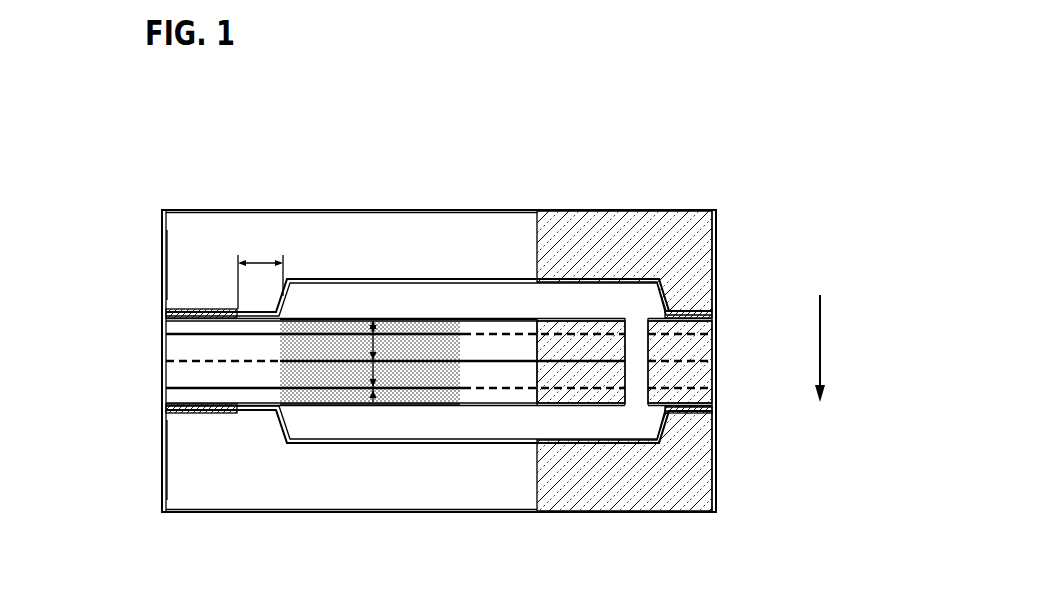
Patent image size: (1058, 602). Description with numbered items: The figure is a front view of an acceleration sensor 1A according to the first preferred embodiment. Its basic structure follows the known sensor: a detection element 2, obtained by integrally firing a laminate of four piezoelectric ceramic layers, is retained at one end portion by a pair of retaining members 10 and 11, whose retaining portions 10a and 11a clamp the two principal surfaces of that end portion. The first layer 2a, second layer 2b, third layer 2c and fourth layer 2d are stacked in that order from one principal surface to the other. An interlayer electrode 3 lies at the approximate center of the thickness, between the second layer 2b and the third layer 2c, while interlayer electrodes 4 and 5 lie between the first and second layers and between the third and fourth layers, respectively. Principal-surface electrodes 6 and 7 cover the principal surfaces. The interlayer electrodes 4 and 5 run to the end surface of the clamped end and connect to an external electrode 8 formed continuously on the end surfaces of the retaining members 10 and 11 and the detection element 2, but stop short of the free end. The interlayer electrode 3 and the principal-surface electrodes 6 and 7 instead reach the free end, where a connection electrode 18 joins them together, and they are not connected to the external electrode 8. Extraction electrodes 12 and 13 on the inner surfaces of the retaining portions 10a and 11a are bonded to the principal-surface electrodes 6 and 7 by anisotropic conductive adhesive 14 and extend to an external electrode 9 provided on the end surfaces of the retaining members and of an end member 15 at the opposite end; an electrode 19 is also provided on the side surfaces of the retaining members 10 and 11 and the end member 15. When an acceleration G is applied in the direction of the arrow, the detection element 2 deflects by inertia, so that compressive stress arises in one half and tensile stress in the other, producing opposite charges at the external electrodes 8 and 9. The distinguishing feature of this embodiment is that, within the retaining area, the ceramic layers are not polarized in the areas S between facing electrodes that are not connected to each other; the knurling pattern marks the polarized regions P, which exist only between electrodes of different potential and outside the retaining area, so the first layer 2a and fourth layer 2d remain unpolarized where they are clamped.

The acceleration sensor 1A is at (646, 167).
The detection element 2 is at (346, 356).
The first layer 2a is at (173, 320).
The second layer 2b is at (178, 352).
The third layer 2c is at (178, 370).
The fourth layer 2d is at (369, 402).
The interlayer electrode 3 is at (432, 358).
The interlayer electrode 4 is at (339, 320).
The interlayer electrode 5 is at (335, 390).
The principal-surface electrode 6 is at (487, 317).
The principal-surface electrode 7 is at (413, 407).
The external electrode 8 is at (160, 220).
The external electrode 9 is at (716, 237).
The retaining member 10 is at (273, 218).
The retaining portion 10a is at (213, 288).
The retaining member 11 is at (260, 505).
The retaining portion 11a is at (193, 438).
The extraction electrode 12 is at (427, 280).
The extraction electrode 13 is at (483, 445).
The anisotropic conductive adhesive 14 is at (208, 308).
The end member 15 is at (707, 370).
The connection electrode 18 is at (533, 347).
The electrode 19 is at (533, 230).
The pitch P is at (375, 343).
The unpolarized area S is at (260, 272).
The acceleration G is at (832, 348).